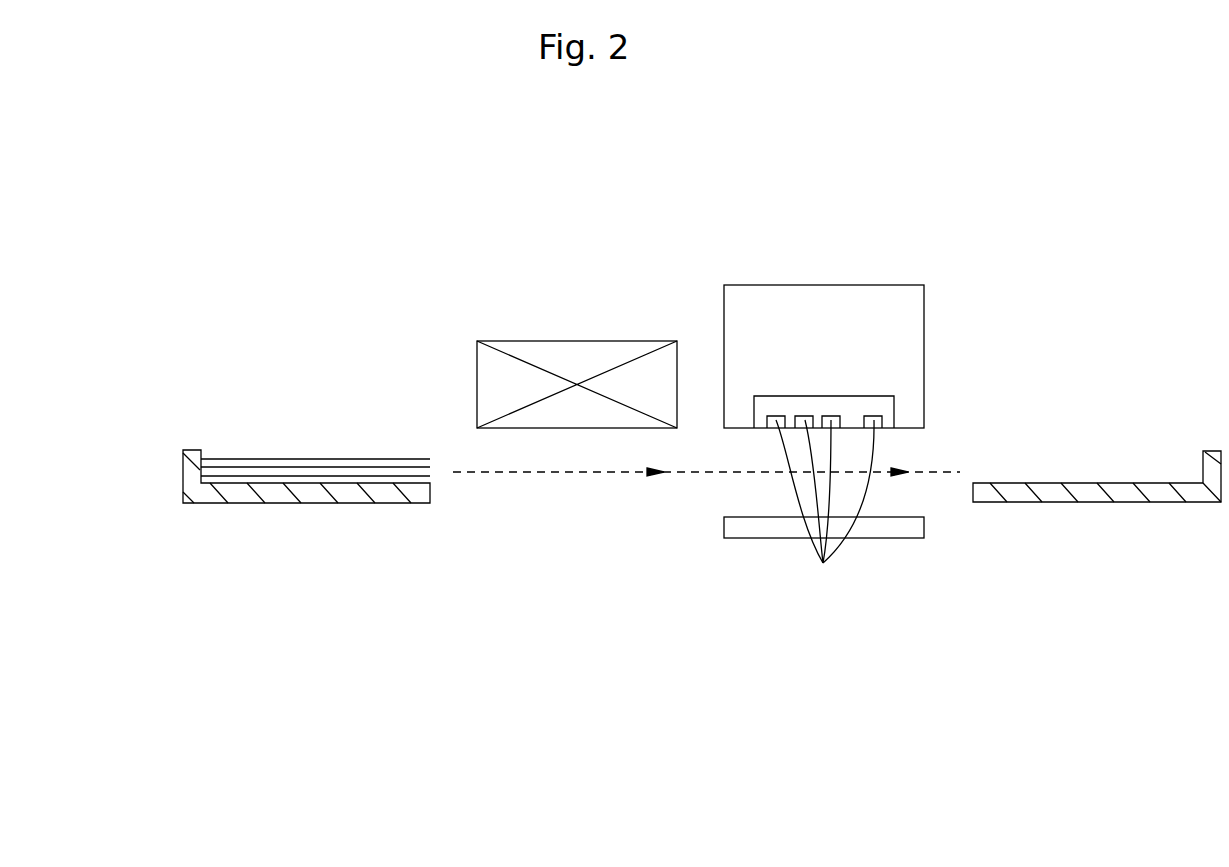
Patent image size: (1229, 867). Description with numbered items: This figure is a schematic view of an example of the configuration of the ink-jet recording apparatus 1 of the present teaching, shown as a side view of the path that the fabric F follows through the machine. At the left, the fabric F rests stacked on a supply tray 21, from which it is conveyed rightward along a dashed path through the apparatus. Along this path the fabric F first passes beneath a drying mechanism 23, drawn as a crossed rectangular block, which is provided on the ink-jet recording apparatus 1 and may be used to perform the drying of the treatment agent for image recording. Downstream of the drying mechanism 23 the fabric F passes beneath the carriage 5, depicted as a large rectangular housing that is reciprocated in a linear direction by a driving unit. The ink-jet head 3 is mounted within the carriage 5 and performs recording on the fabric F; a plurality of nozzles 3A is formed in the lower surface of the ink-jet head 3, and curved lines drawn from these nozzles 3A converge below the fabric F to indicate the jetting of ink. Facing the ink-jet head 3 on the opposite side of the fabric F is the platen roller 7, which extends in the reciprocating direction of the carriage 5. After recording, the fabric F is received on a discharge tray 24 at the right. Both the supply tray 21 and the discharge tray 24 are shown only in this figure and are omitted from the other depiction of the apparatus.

The ink-jet recording apparatus 1 is at (950, 247).
The ink-jet head 3 is at (855, 396).
The nozzles 3A is at (825, 512).
The carriage 5 is at (785, 285).
The platen roller 7 is at (903, 527).
The supply tray 21 is at (313, 503).
The drying mechanism 23 is at (582, 340).
The discharge tray 24 is at (1093, 490).
The fabric F is at (330, 458).